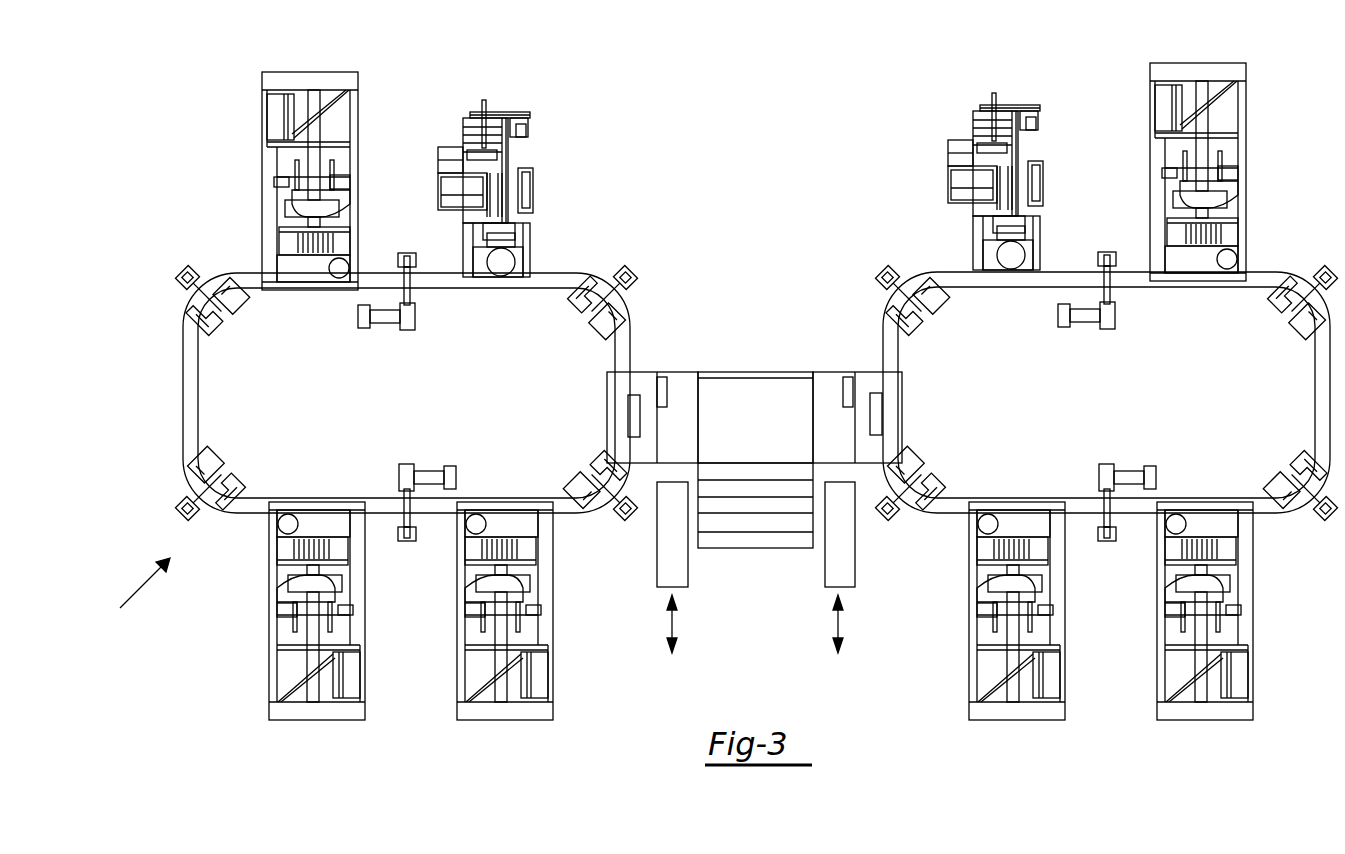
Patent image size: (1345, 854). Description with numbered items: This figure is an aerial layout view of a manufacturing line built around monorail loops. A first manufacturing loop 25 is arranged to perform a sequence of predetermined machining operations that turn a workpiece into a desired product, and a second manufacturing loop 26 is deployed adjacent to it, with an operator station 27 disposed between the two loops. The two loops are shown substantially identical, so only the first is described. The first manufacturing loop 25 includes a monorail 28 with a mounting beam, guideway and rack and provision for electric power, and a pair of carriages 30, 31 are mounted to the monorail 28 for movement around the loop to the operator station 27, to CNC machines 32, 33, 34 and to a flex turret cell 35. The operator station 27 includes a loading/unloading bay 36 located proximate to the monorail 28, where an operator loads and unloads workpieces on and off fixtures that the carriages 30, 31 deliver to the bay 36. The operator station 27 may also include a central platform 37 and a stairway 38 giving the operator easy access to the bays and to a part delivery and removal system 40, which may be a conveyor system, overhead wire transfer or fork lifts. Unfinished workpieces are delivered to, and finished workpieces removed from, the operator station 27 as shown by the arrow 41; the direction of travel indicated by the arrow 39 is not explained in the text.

The first manufacturing loop 25 is at (597, 208).
The second manufacturing loop 26 is at (918, 222).
The operator station 27 is at (764, 370).
The monorail 28 is at (183, 405).
The carriage 30 is at (383, 327).
The carriage 31 is at (428, 465).
The CNC machine 32 is at (553, 680).
The CNC machine 33 is at (267, 662).
The CNC machine 34 is at (262, 115).
The flex turret cell 35 is at (478, 108).
The loading/unloading bay 36 is at (645, 372).
The central platform 37 is at (727, 390).
The stairway 38 is at (737, 540).
The direction of travel 39 is at (136, 593).
The part delivery and removal system 40 is at (657, 552).
The arrow 41 is at (670, 623).